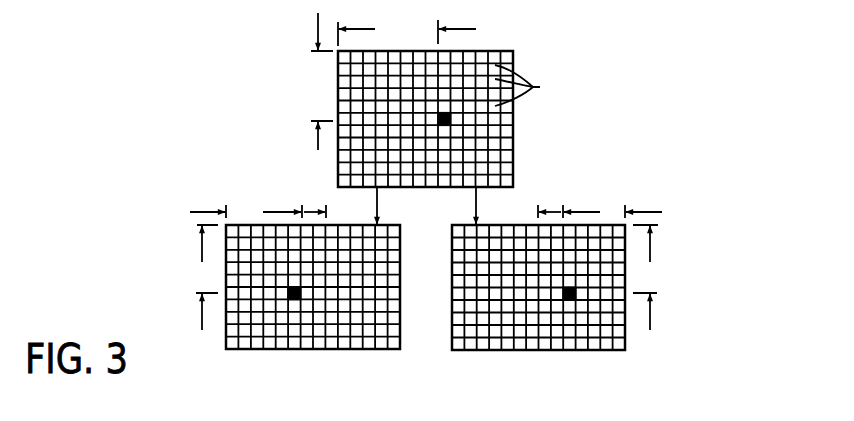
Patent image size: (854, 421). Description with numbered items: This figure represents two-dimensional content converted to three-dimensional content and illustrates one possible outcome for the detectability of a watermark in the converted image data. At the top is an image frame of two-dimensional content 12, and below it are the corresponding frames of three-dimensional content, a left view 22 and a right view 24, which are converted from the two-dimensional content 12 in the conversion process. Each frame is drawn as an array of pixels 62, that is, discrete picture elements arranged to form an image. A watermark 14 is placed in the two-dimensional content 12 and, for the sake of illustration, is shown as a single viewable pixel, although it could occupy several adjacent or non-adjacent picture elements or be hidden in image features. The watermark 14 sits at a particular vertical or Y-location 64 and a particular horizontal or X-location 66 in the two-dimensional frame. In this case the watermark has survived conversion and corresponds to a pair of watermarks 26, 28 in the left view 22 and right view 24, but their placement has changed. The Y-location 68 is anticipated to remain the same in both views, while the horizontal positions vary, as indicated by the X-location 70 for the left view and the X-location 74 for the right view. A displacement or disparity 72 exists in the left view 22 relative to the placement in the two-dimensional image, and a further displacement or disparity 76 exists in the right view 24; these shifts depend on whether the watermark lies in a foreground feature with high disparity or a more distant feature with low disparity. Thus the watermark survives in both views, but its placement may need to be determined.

The 2D content 12 is at (497, 51).
The watermark 14 is at (447, 118).
The pixels 62 is at (528, 85).
The Y-location 64 is at (317, 16).
The X-location 66 is at (462, 29).
The left view 22 is at (358, 349).
The right view 24 is at (530, 350).
The watermark 26 is at (294, 299).
The watermark 28 is at (570, 300).
The Y-location 68 is at (202, 318).
The X-location 70 is at (205, 210).
The displacement or disparity 72 is at (303, 208).
The X-location 74 is at (648, 210).
The displacement or disparity 76 is at (557, 208).